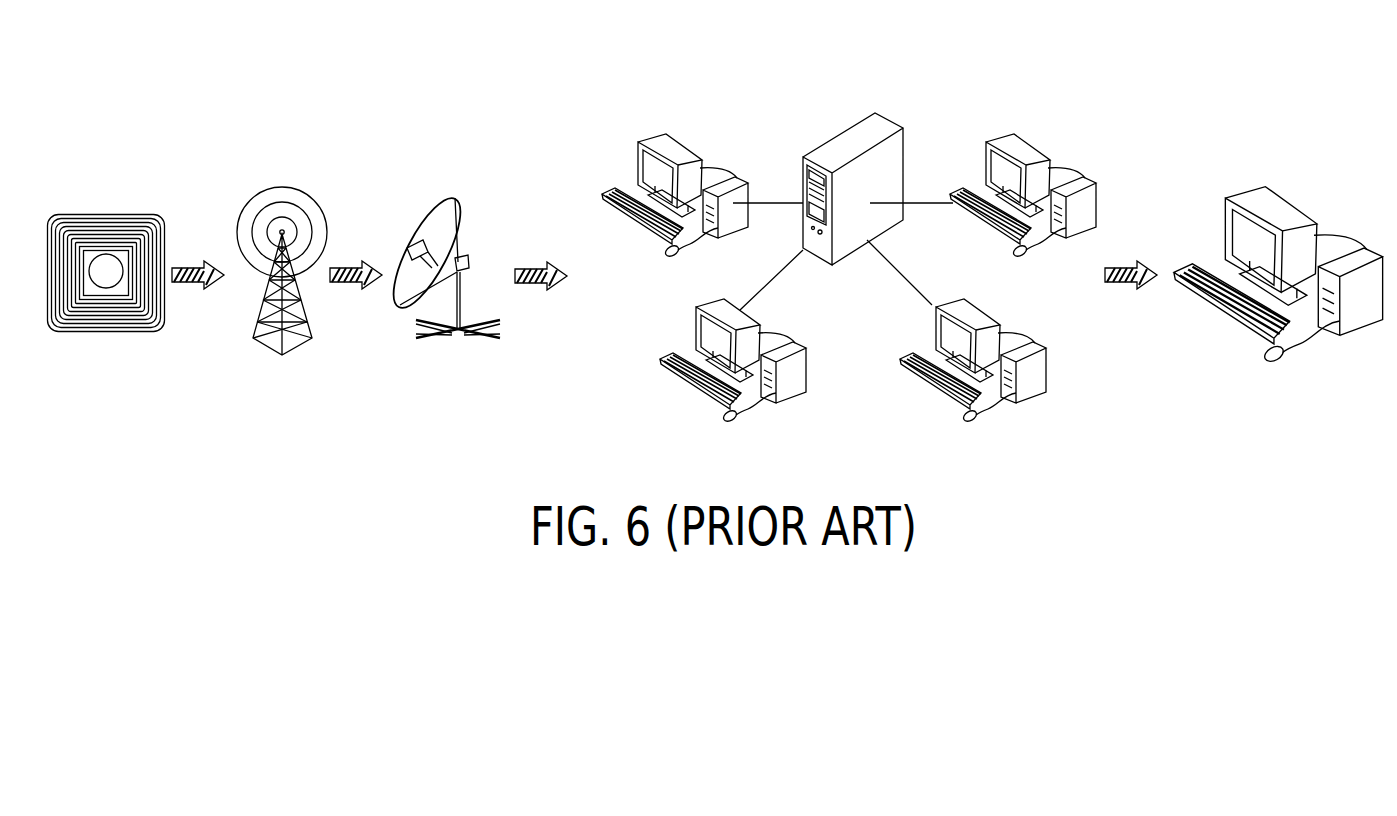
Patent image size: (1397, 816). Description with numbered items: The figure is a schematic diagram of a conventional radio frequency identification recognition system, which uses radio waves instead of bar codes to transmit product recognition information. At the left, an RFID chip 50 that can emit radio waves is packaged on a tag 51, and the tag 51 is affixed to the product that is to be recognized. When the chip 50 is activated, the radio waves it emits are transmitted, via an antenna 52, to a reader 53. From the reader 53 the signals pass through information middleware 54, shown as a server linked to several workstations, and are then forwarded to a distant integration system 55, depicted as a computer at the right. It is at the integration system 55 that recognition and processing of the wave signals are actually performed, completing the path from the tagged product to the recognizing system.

The RFID chip 50 is at (100, 267).
The tag 51 is at (158, 215).
The antenna 52 is at (293, 187).
The reader 53 is at (452, 193).
The information middleware 54 is at (838, 130).
The integration system 55 is at (1265, 203).